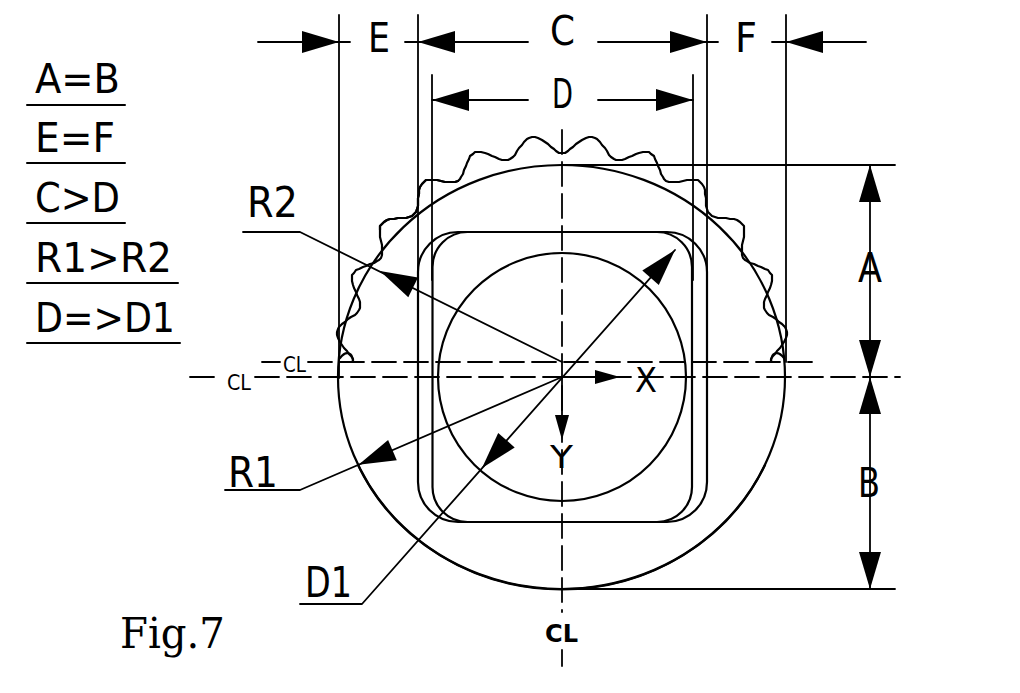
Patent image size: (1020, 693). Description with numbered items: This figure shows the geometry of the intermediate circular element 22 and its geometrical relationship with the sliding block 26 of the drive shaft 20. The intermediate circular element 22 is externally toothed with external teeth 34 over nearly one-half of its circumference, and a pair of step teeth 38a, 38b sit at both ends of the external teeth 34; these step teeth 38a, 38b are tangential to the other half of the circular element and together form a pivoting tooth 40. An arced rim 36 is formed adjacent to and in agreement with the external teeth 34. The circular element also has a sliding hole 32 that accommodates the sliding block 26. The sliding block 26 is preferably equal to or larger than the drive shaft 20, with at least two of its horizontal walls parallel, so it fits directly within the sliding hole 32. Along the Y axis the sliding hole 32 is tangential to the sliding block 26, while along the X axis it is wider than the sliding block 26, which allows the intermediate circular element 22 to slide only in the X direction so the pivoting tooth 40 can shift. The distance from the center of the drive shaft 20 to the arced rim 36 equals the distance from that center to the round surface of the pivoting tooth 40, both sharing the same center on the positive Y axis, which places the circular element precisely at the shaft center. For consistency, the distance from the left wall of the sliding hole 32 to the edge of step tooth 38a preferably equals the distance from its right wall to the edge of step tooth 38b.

The drive shaft 20 is at (632, 442).
The intermediate circular element 22 is at (515, 562).
The sliding block 26 is at (672, 487).
The sliding hole 32 is at (425, 458).
The external teeth 34 is at (725, 222).
The arced rim 36 is at (393, 235).
The step tooth 38a is at (339, 362).
The step tooth 38b is at (787, 362).
The pivoting tooth 40 is at (688, 546).